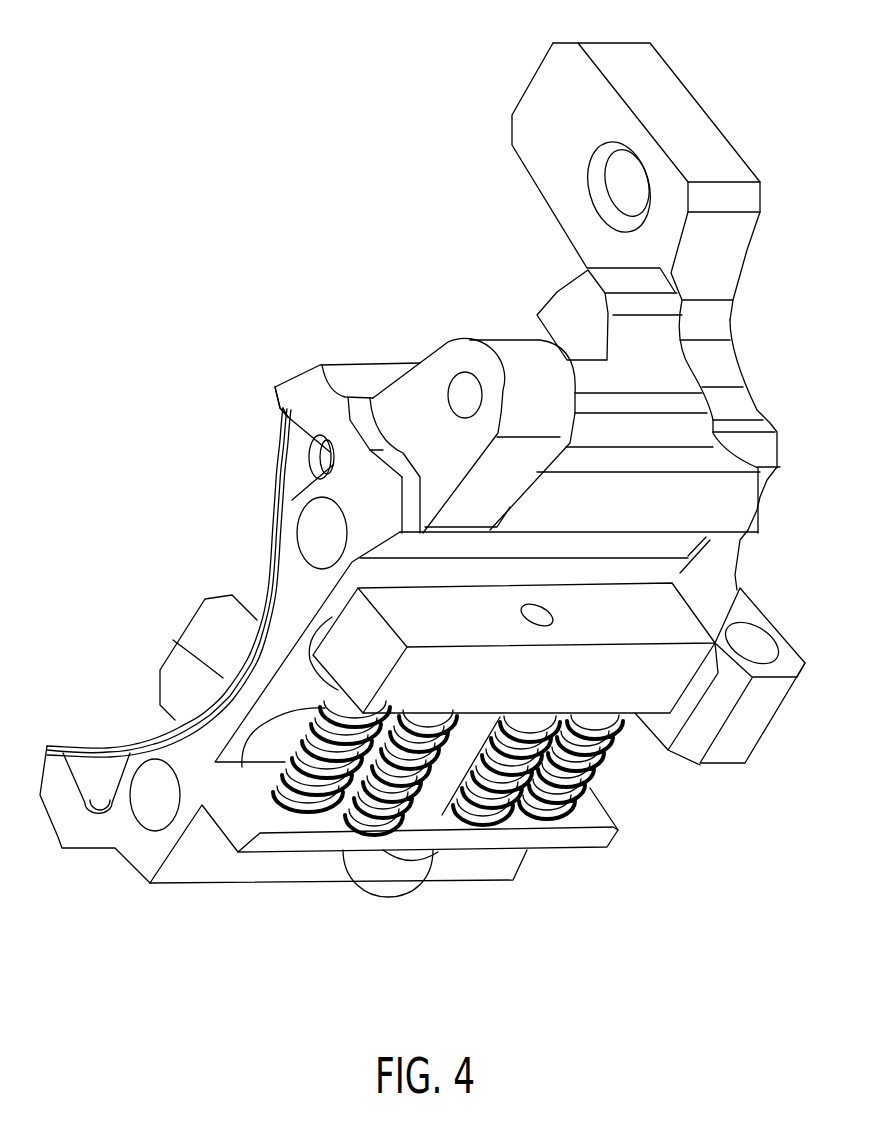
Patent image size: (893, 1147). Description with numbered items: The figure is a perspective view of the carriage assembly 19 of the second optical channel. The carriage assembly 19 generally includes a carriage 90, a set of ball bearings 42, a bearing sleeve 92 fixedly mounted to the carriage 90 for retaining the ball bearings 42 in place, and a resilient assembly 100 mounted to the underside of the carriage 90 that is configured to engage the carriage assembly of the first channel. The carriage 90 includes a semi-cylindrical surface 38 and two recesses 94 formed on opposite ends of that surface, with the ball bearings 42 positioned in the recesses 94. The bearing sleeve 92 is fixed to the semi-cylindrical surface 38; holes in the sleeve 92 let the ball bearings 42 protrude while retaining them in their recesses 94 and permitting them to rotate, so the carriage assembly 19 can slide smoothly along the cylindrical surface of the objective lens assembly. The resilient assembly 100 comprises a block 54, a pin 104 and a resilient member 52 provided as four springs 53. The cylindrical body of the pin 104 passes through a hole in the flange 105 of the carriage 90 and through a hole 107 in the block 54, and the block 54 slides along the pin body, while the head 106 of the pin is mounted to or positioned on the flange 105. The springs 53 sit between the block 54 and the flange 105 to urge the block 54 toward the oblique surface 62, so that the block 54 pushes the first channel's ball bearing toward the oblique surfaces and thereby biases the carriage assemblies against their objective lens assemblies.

The carriage assembly 19 is at (372, 233).
The semi-cylindrical surface 38 is at (177, 650).
The ball bearings 42 is at (322, 457).
The resilient member 52 is at (516, 873).
The springs 53 is at (350, 880).
The block 54 is at (697, 767).
The oblique surface 62 is at (722, 540).
The carriage 90 is at (656, 72).
The bearing sleeve 92 is at (92, 750).
The recesses 94 is at (288, 417).
The resilient assembly 100 is at (678, 675).
The pin 104 is at (413, 872).
The flange 105 is at (232, 828).
The head 106 is at (395, 883).
The hole 107 is at (545, 626).